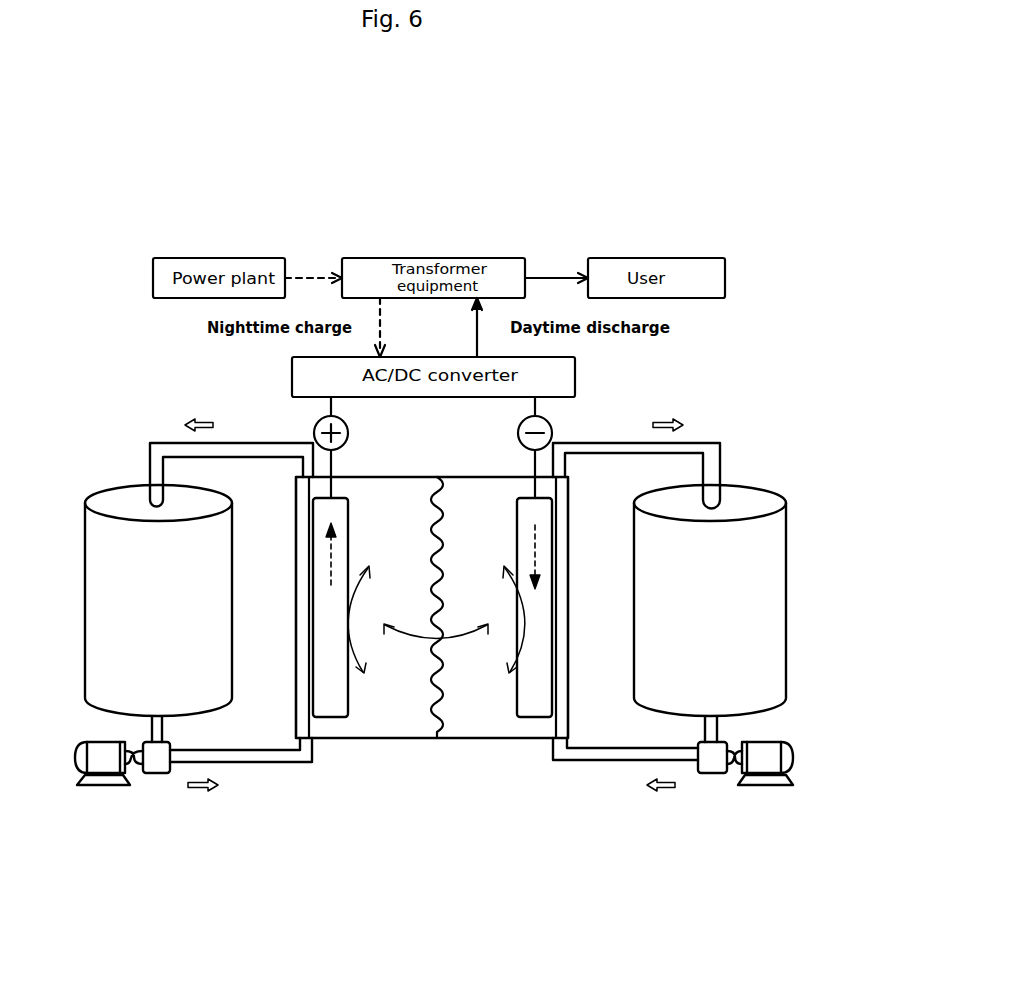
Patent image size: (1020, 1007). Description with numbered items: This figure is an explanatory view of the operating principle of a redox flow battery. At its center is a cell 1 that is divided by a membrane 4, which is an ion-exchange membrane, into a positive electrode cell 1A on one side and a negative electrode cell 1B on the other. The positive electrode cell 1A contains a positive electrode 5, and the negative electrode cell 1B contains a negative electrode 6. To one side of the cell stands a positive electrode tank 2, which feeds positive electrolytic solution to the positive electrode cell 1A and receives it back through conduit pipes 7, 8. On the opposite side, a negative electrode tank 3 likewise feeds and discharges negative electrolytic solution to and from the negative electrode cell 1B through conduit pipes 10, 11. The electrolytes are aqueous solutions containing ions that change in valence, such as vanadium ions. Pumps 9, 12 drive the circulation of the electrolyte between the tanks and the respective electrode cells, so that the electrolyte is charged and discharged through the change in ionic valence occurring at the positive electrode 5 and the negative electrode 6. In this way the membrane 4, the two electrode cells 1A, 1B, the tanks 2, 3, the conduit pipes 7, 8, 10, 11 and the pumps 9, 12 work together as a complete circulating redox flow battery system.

The cell 1 is at (401, 466).
The positive electrode cell 1A is at (377, 738).
The negative electrode cell 1B is at (493, 738).
The positive electrode tank 2 is at (113, 505).
The negative electrode tank 3 is at (753, 495).
The membrane 4 is at (437, 736).
The positive electrode 5 is at (333, 707).
The negative electrode 6 is at (535, 707).
The conduit pipe 7 is at (260, 762).
The conduit pipe 8 is at (165, 440).
The pump 9 is at (110, 785).
The conduit pipe 10 is at (612, 760).
The conduit pipe 11 is at (703, 443).
The pump 12 is at (760, 785).